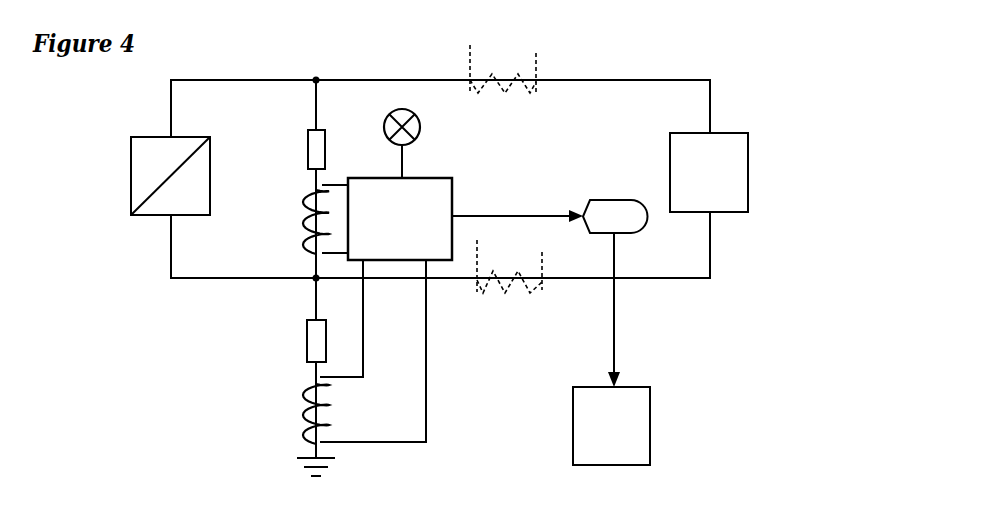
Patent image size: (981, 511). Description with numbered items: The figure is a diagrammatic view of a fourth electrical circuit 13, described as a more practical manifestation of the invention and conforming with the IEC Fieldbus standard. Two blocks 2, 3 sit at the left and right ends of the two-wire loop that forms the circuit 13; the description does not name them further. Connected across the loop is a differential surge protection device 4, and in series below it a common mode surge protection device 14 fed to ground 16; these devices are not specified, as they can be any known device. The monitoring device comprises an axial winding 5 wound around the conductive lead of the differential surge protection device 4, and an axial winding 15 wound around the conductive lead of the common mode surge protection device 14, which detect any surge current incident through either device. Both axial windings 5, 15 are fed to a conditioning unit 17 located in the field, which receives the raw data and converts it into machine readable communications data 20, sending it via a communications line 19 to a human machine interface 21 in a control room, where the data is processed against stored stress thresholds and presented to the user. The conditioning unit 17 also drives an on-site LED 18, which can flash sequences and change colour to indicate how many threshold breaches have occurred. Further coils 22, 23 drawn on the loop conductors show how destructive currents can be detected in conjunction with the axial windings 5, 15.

The first electrical device / power source 2 is at (131, 137).
The second electrical device / load 3 is at (748, 133).
The differential surge protection device 4 is at (308, 135).
The axial winding 5 is at (305, 190).
The electrical circuit 13 is at (335, 48).
The common mode surge protection device 14 is at (307, 333).
The axial winding 15 is at (305, 410).
The ground 16 is at (295, 458).
The conditioning unit 17 is at (452, 188).
The LED 18 is at (421, 127).
The communications line 19 is at (525, 213).
The machine readable communications data 20 is at (625, 233).
The human machine interface 21 is at (650, 387).
The coil 22 is at (503, 293).
The coil 23 is at (488, 78).